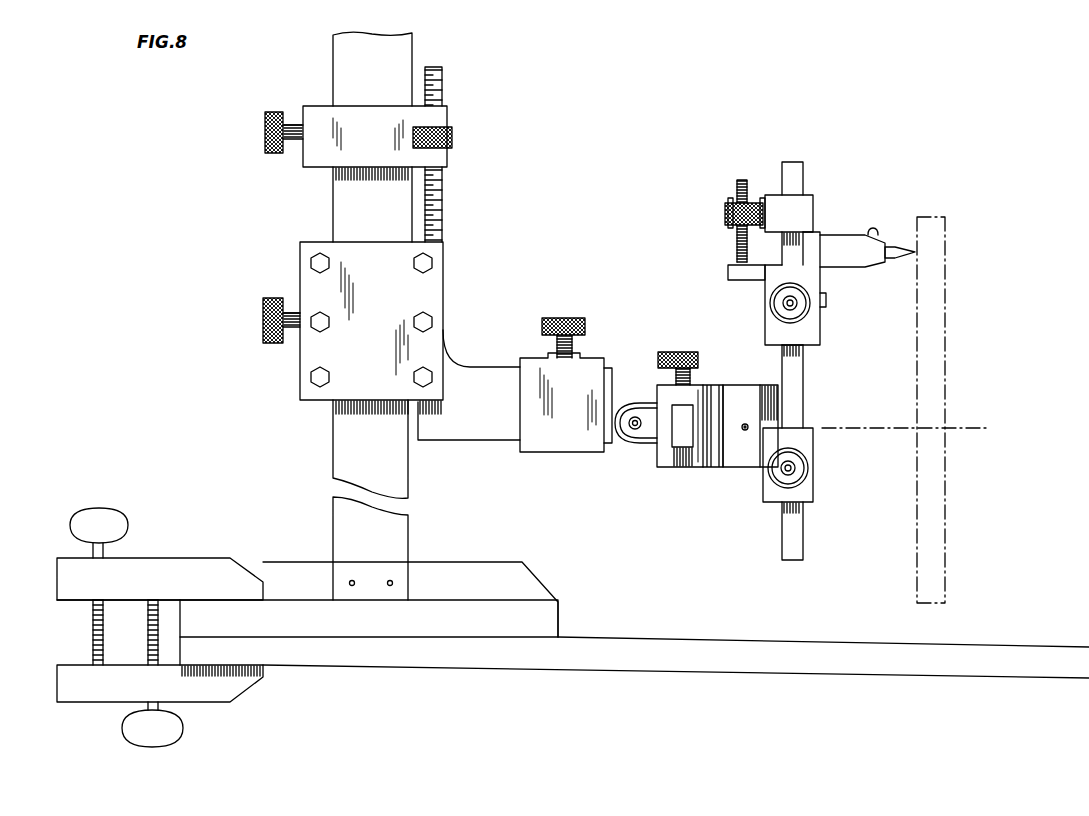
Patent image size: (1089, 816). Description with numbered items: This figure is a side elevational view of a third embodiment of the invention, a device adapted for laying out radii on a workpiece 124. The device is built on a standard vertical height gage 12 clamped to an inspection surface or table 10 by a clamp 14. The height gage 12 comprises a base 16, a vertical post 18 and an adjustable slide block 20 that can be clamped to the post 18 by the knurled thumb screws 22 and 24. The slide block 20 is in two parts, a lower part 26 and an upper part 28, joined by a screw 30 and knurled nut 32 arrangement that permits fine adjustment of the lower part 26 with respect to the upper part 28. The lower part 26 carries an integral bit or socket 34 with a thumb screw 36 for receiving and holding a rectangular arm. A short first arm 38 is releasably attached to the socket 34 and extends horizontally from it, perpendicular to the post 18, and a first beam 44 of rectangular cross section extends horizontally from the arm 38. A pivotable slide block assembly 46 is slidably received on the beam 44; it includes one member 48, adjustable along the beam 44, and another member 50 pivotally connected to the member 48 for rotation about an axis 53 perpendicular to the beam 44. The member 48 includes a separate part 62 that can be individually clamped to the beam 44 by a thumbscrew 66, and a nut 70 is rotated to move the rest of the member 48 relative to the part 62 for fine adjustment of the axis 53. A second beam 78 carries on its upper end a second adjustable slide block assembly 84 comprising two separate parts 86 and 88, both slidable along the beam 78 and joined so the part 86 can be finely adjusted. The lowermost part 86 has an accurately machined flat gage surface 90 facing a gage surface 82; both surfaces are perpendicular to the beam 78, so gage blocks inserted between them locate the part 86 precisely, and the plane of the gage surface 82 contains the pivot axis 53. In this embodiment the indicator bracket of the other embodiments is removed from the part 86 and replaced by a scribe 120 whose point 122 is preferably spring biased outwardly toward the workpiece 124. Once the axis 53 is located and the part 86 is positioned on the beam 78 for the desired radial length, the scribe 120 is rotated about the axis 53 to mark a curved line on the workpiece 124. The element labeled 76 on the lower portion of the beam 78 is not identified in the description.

The inspection surface or table 10 is at (672, 637).
The vertical height gage 12 is at (584, 600).
The clamp 14 is at (165, 558).
The base 16 is at (560, 626).
The vertical post 18 is at (333, 66).
The adjustable slide block 20 is at (483, 302).
The knurled thumb screw 22 is at (263, 330).
The knurled thumb screw 24 is at (265, 140).
The lower part 26 is at (376, 366).
The upper part 28 is at (384, 146).
The screw 30 is at (443, 192).
The knurled nut 32 is at (452, 140).
The bit or socket 34 is at (535, 358).
The thumb screw 36 is at (560, 318).
The first arm 38 is at (490, 443).
The first beam 44 is at (676, 466).
The pivotable slide block assembly 46 is at (726, 343).
The member 48 is at (716, 468).
The member 50 is at (766, 385).
The axis 53 is at (875, 430).
The part 62 is at (657, 392).
The thumbscrew 66 is at (690, 352).
The nut 70 is at (640, 445).
The lower clamp 76 is at (770, 504).
The second beam 78 is at (782, 170).
The gage surface 82 is at (808, 428).
The second adjustable slide block assembly 84 is at (719, 178).
The part 86 is at (728, 273).
The part 88 is at (725, 210).
The gage surface 90 is at (783, 352).
The scribe 120 is at (850, 235).
The point 122 is at (900, 262).
The workpiece 124 is at (948, 245).